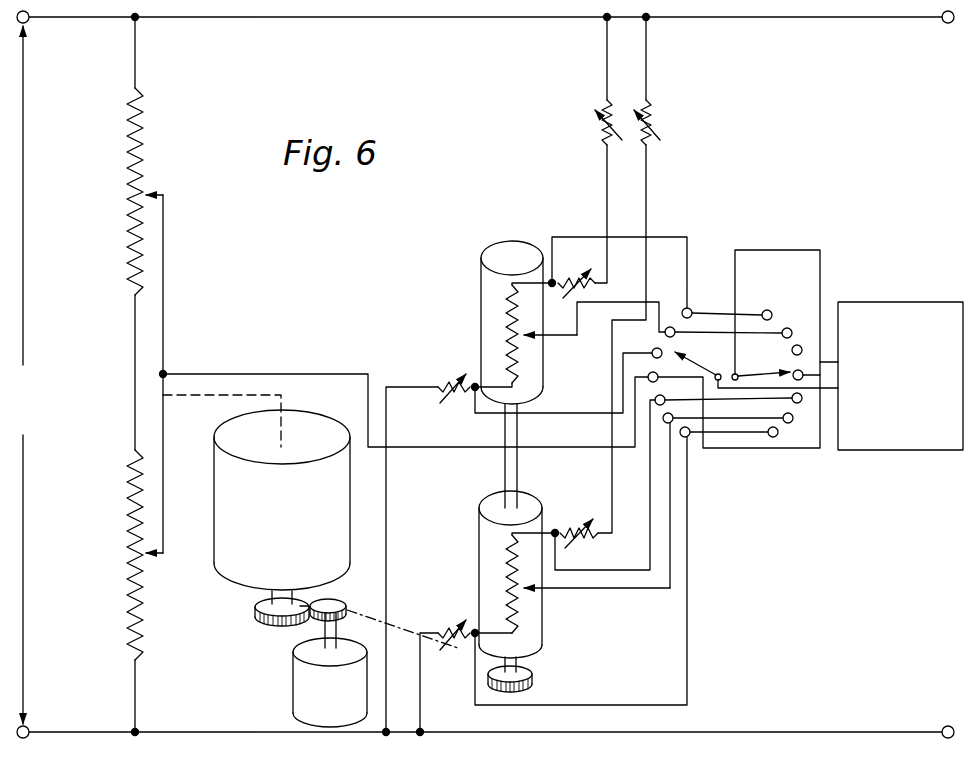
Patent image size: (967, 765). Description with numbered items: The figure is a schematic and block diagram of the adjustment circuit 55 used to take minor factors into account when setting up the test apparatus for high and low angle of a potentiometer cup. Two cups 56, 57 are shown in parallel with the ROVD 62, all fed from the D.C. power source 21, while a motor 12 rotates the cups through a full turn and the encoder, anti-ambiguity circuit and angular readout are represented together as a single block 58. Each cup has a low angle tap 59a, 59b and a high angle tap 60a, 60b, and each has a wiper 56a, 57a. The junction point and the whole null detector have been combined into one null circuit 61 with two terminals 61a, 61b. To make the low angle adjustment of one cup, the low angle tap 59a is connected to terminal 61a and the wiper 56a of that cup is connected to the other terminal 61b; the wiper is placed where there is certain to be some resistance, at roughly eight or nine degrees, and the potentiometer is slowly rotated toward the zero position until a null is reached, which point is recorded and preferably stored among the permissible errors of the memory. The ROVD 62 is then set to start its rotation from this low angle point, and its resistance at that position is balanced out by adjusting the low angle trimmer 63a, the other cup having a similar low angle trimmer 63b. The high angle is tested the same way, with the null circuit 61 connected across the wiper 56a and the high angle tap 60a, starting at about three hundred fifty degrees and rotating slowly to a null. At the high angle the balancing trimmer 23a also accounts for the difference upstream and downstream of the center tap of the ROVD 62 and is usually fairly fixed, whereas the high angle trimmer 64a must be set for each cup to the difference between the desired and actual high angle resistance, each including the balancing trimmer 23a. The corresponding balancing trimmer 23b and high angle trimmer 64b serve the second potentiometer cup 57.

The motor 12 is at (300, 702).
The D.C. power source 21 is at (20, 375).
The balancing trimmer 23a is at (651, 127).
The balancing trimmer 23b is at (602, 111).
The circuit 55 is at (405, 18).
The cup 56 is at (532, 638).
The wiper 56a is at (667, 424).
The cup 57 is at (503, 243).
The wiper 57a is at (668, 327).
The block 58 is at (247, 583).
The low angle tap 59a is at (687, 438).
The low angle tap 59b is at (652, 350).
The high angle tap 60a is at (671, 396).
The high angle tap 60b is at (690, 309).
The null circuit 61 is at (895, 303).
The terminal 61a is at (716, 373).
The terminal 61b is at (754, 373).
The ROVD 62 is at (146, 141).
The low angle trimmer 63a is at (441, 628).
The low angle trimmer 63b is at (441, 385).
The high angle trimmer 64a is at (570, 530).
The high angle trimmer 64b is at (568, 278).